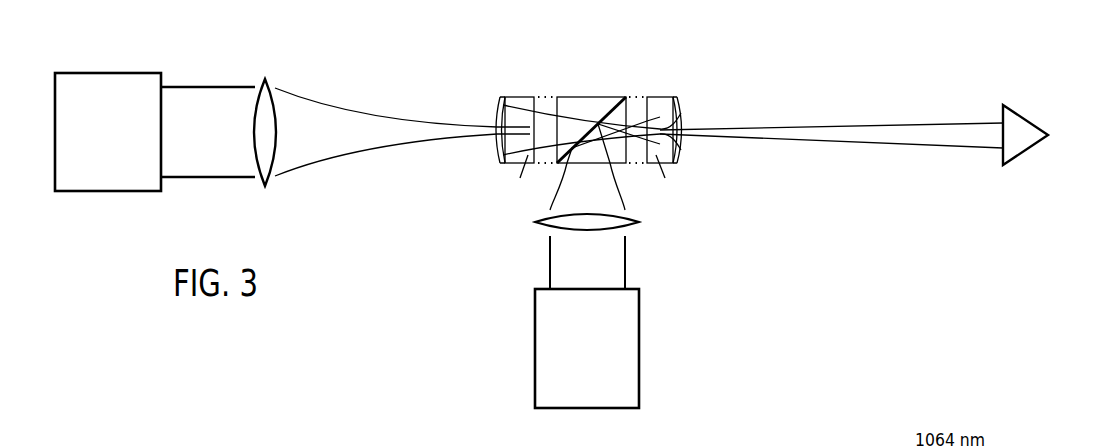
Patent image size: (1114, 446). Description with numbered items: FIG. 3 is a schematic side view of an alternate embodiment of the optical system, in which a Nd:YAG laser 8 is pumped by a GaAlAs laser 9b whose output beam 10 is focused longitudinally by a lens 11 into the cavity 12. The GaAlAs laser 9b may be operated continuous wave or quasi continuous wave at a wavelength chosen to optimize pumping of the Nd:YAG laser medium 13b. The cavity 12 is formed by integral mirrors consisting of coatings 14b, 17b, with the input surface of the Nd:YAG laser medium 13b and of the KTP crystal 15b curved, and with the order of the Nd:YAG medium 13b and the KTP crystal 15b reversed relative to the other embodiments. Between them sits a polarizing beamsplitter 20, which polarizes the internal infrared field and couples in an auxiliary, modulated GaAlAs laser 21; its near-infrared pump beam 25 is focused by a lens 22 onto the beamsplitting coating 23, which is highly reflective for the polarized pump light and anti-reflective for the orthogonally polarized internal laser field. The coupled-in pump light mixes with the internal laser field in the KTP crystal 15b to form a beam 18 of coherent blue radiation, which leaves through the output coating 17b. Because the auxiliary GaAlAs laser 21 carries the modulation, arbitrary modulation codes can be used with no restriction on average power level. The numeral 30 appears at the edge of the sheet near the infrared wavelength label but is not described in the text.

The Nd:YAG laser 8 is at (503, 50).
The GaAlAs laser 9b is at (93, 182).
The output beam 10 is at (208, 132).
The lens 11 is at (256, 134).
The cavity 12 is at (545, 100).
The Nd:YAG laser medium 13b is at (524, 96).
The coating 14b is at (498, 98).
The KTP crystal 15b is at (660, 96).
The coating 17b is at (683, 100).
The beam 18 is at (854, 143).
The polarizing beamsplitter 20 is at (592, 116).
The auxiliary GaAlAs laser 21 is at (577, 398).
The lens 22 is at (587, 222).
The beamsplitting coating 23 is at (608, 96).
The 808 nm beam 25 is at (587, 262).
The 1064 nm beam 30 is at (227, 440).